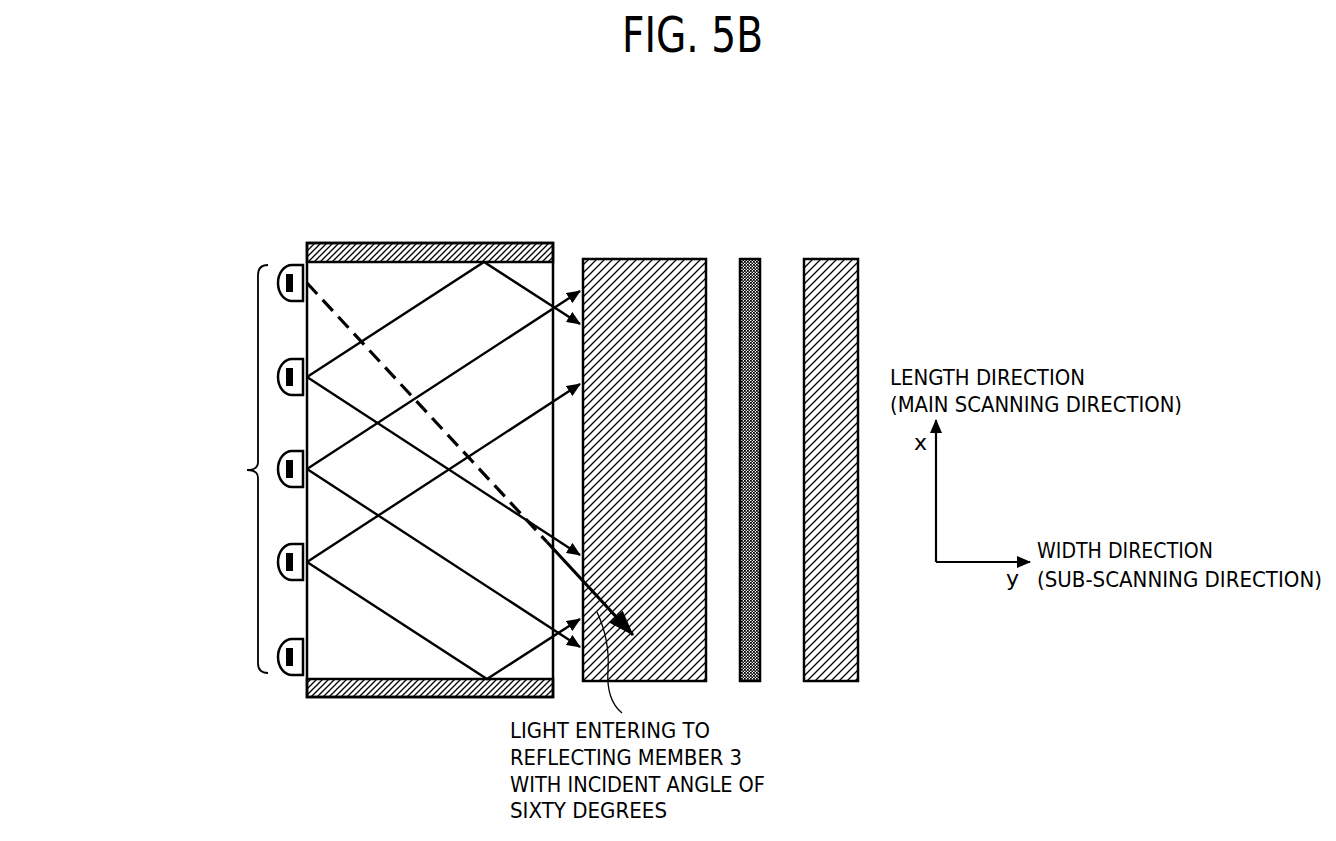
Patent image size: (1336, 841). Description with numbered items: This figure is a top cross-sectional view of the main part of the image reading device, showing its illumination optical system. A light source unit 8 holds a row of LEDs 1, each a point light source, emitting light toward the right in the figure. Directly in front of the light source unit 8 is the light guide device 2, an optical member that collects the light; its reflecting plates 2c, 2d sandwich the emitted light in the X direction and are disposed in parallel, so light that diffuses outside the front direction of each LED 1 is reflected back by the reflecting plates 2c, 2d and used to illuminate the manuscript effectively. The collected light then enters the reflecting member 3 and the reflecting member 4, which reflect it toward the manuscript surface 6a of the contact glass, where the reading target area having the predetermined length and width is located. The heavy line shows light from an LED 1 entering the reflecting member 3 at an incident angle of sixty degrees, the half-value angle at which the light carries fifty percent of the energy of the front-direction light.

The LED 1 is at (289, 267).
The light guide device 2 is at (363, 500).
The reflecting plate 2c is at (323, 243).
The reflecting plate 2d is at (325, 697).
The reflecting member 3 is at (643, 258).
The reflecting member 4 is at (830, 681).
The manuscript surface 6a is at (755, 258).
The light source unit 8 is at (199, 447).